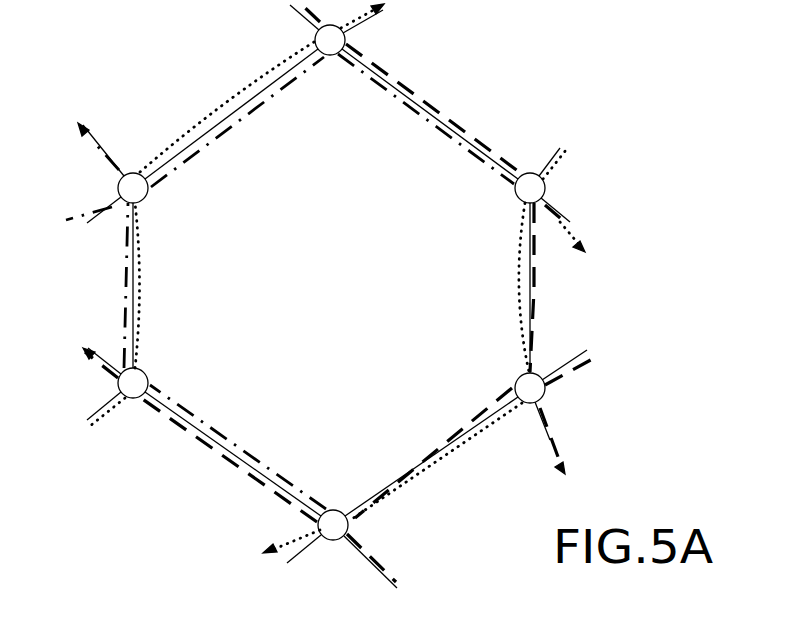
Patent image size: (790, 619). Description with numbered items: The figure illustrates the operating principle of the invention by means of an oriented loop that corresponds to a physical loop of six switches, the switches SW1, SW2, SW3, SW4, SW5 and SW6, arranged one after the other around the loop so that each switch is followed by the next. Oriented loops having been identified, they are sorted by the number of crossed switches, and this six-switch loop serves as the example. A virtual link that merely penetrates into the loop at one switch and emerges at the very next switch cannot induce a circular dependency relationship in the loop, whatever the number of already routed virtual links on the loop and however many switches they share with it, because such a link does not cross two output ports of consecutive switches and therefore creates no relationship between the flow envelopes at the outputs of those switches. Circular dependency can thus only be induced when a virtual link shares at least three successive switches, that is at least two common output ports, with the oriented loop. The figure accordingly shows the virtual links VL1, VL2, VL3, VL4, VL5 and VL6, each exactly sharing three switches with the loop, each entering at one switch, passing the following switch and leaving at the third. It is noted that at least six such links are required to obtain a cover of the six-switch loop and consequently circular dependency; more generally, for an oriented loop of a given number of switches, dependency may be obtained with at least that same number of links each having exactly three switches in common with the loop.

The switch SW1 is at (348, 54).
The switch SW2 is at (529, 212).
The switch SW3 is at (519, 423).
The switch SW4 is at (308, 514).
The switch SW5 is at (138, 373).
The switch SW6 is at (132, 168).
The virtual link VL1 is at (284, 15).
The virtual link VL2 is at (581, 155).
The virtual link VL3 is at (597, 365).
The virtual link VL4 is at (395, 563).
The virtual link VL5 is at (77, 414).
The virtual link VL6 is at (74, 227).